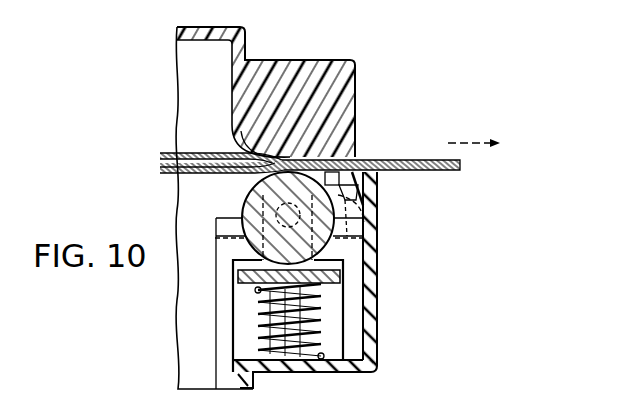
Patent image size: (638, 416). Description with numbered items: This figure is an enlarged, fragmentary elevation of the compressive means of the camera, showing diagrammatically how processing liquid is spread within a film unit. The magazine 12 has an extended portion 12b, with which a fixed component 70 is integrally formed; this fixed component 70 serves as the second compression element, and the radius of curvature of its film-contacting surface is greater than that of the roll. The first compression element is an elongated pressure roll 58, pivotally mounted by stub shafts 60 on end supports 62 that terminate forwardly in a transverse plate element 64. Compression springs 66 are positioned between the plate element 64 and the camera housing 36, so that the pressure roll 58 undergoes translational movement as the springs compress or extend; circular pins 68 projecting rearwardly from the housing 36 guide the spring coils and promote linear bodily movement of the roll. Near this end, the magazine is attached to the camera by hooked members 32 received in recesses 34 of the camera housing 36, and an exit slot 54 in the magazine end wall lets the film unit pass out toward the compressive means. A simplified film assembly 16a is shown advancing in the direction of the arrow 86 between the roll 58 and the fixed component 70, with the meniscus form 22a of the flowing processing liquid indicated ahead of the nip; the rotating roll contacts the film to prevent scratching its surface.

The magazine 12 is at (228, 22).
The extended portion of the magazine 12b is at (355, 108).
The film assembly 16a is at (439, 173).
The meniscus form of the processing liquid 22a is at (246, 153).
The hooked members 32 is at (357, 187).
The apertures or recesses 34 is at (360, 211).
The camera housing 36 is at (377, 298).
The exit slot 54 is at (362, 158).
The pressure roll 58 is at (258, 192).
The stub shafts 60 is at (275, 213).
The end supports 62 is at (246, 238).
The plate element 64 is at (240, 280).
The compression springs 66 is at (268, 303).
The circular pins 68 is at (282, 344).
The fixed component 70 is at (243, 149).
The arrow 86 is at (466, 143).